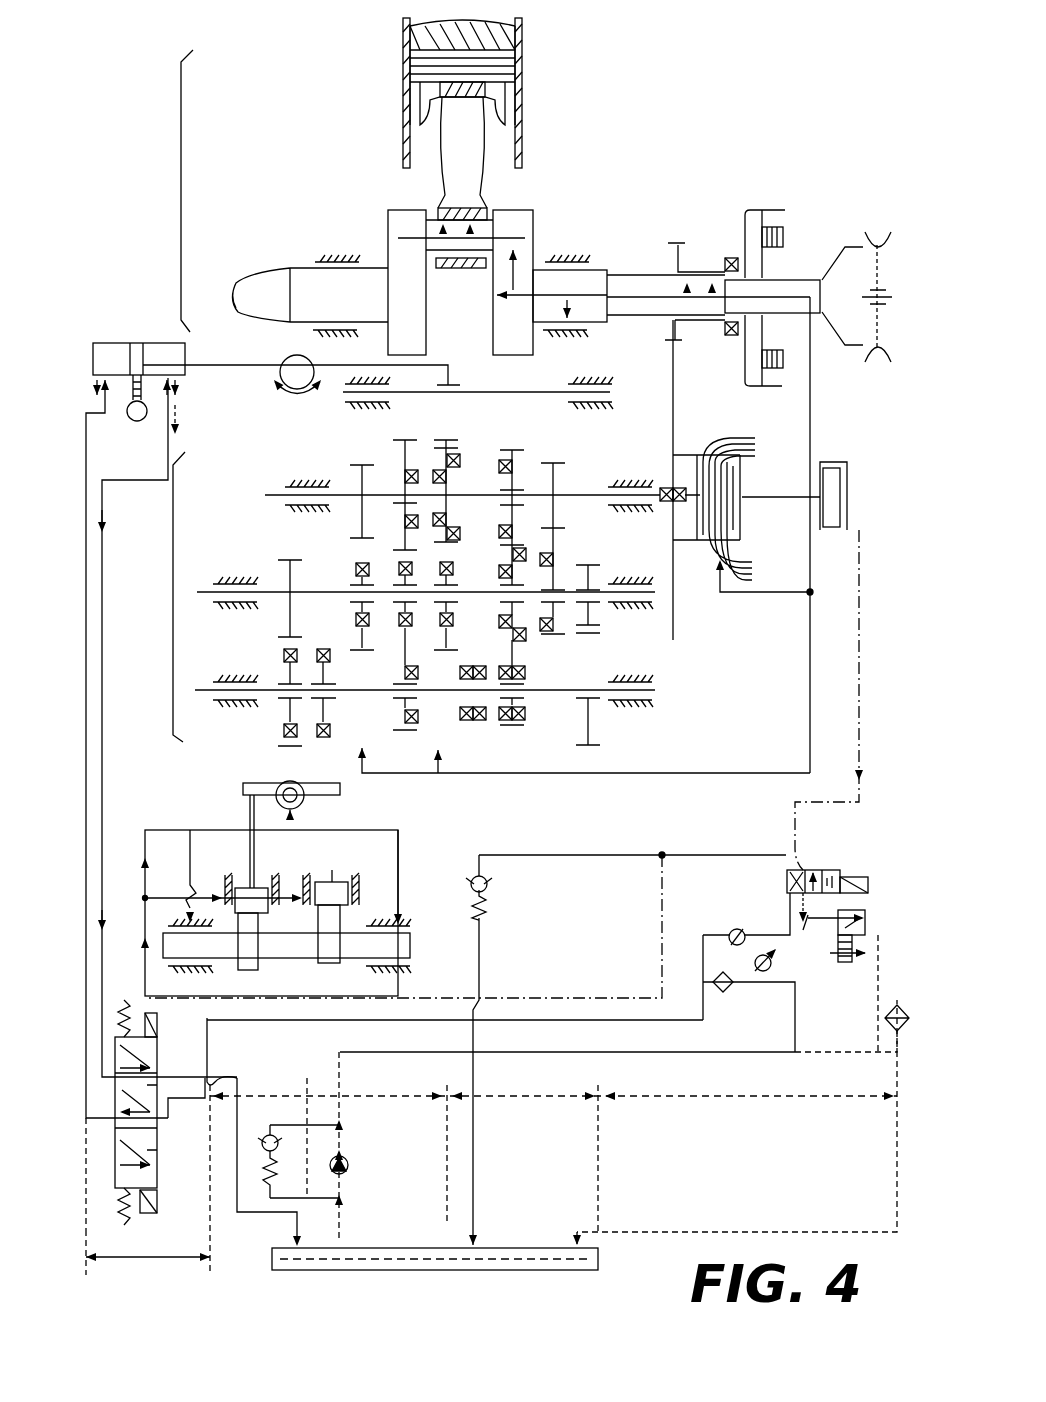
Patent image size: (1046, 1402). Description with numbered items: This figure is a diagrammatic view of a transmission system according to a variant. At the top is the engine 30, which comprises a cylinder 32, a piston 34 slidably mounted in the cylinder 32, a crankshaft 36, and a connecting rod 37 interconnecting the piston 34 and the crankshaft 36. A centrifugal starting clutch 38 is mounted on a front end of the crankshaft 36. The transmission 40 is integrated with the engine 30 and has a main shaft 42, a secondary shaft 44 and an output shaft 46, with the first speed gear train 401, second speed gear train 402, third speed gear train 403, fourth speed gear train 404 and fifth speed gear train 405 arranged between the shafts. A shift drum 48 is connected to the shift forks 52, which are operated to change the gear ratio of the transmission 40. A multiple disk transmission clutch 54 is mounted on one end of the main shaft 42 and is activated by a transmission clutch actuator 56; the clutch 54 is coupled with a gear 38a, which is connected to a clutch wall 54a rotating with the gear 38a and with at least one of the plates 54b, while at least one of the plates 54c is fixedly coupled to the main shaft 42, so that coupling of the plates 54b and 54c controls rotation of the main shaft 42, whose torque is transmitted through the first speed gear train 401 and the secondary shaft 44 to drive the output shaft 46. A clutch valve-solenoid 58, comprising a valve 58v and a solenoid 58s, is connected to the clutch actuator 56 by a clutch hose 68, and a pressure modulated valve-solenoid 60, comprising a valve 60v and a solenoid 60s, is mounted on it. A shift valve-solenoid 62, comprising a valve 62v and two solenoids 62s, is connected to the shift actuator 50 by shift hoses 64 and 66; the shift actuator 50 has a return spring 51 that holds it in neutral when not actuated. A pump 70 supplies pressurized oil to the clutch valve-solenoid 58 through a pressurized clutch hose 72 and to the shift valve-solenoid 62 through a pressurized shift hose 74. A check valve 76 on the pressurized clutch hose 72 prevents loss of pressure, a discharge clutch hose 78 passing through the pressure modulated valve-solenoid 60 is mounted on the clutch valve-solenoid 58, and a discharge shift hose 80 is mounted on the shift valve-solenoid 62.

The engine 30 is at (181, 202).
The cylinder 32 is at (522, 160).
The piston 34 is at (512, 42).
The crankshaft 36 is at (535, 225).
The connecting rod 37 is at (440, 190).
The centrifugal starting clutch 38 is at (760, 210).
The gear 38a is at (675, 410).
The transmission 40 is at (173, 614).
The first speed gear train 401 is at (554, 535).
The second speed gear train 402 is at (358, 537).
The third speed gear train 403 is at (449, 526).
The fourth speed gear train 404 is at (494, 571).
The fifth speed gear train 405 is at (407, 566).
The main shaft 42 is at (593, 495).
The secondary shaft 44 is at (605, 592).
The output shaft 46 is at (600, 690).
The shift drum 48 is at (290, 362).
The shift actuator 50 is at (128, 343).
The return spring 51 is at (146, 410).
The shift forks 52 is at (450, 394).
The multiple disk transmission clutch 54 is at (745, 505).
The clutch wall 54a is at (685, 540).
The plates 54b is at (756, 448).
The plates 54c is at (752, 558).
The transmission clutch actuator 56 is at (835, 462).
The clutch valve-solenoid 58 is at (822, 870).
The valve 58v is at (843, 872).
The solenoid 58s is at (870, 886).
The pressure modulated valve-solenoid 60 is at (868, 912).
The valve 60v is at (838, 925).
The solenoid 60s is at (741, 1125).
The shift valve-solenoid 62 is at (120, 1032).
The valve 62v is at (160, 1054).
The solenoids 62s is at (176, 1228).
The shift hose 64 is at (86, 772).
The shift hose 66 is at (102, 818).
The clutch hose 68 is at (859, 590).
The pump 70 is at (349, 1165).
The pressurized clutch hose 72 is at (703, 972).
The pressurized shift hose 74 is at (655, 1028).
The check valve 76 is at (746, 928).
The discharge clutch hose 78 is at (781, 959).
The discharge shift hose 80 is at (237, 1080).